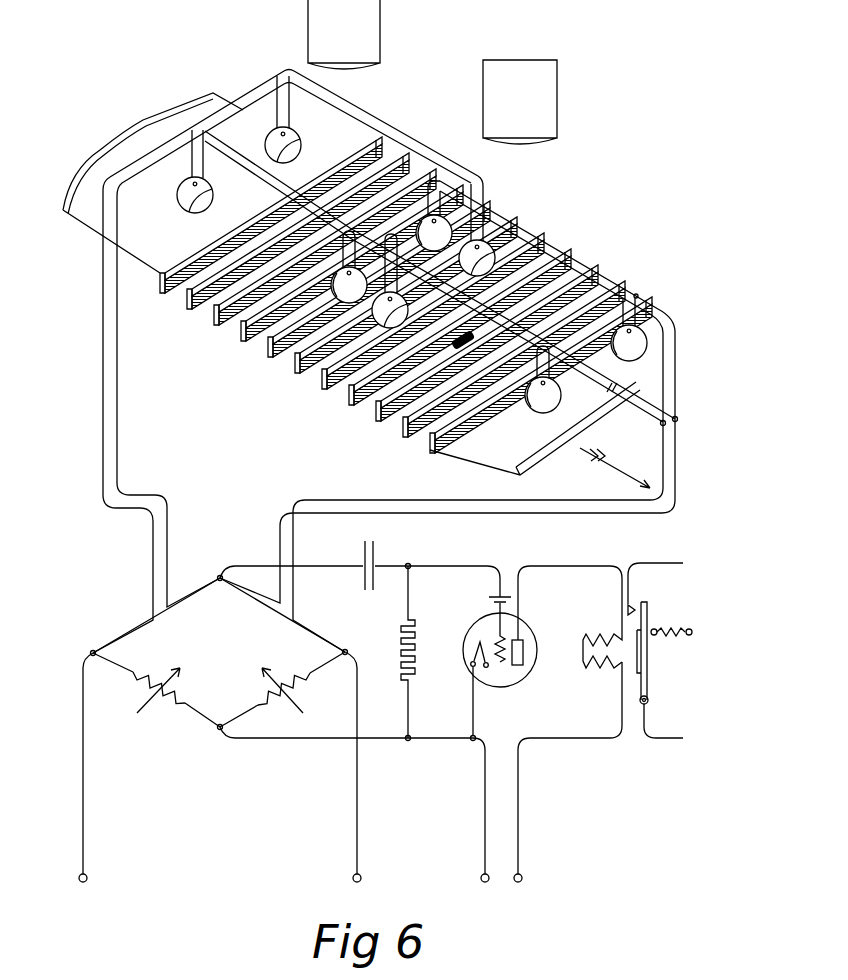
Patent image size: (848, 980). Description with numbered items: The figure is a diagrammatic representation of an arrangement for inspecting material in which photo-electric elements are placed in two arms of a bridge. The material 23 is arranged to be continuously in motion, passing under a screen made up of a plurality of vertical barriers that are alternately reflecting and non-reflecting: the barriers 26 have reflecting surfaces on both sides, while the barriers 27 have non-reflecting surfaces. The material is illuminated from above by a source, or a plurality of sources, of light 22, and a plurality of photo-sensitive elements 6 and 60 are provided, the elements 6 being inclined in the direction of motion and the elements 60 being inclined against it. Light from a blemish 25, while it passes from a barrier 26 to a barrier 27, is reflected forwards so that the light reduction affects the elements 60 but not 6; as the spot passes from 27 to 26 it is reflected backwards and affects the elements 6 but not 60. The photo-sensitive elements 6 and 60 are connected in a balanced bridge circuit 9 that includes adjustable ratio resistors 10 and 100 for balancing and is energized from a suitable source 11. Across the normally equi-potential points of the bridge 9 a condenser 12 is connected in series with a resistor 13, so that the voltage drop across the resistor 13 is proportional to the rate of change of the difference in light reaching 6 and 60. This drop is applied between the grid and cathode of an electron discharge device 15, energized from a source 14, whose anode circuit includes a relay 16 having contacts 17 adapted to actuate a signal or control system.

The photo-sensitive element 6 is at (336, 202).
The photo-sensitive element 60 is at (489, 297).
The bridge circuit 9 is at (219, 653).
The ratio resistor 10 is at (152, 694).
The ratio resistor 100 is at (291, 693).
The source 11 is at (220, 769).
The condenser 12 is at (353, 565).
The resistor 13 is at (399, 652).
The source 14 is at (547, 774).
The electron discharge device 15 is at (531, 653).
The relay 16 is at (664, 670).
The contacts 17 is at (655, 589).
The source of light 22 is at (432, 72).
The material 23 is at (153, 183).
The blemish 25 is at (465, 348).
The barrier 26 is at (428, 444).
The barrier 27 is at (625, 277).